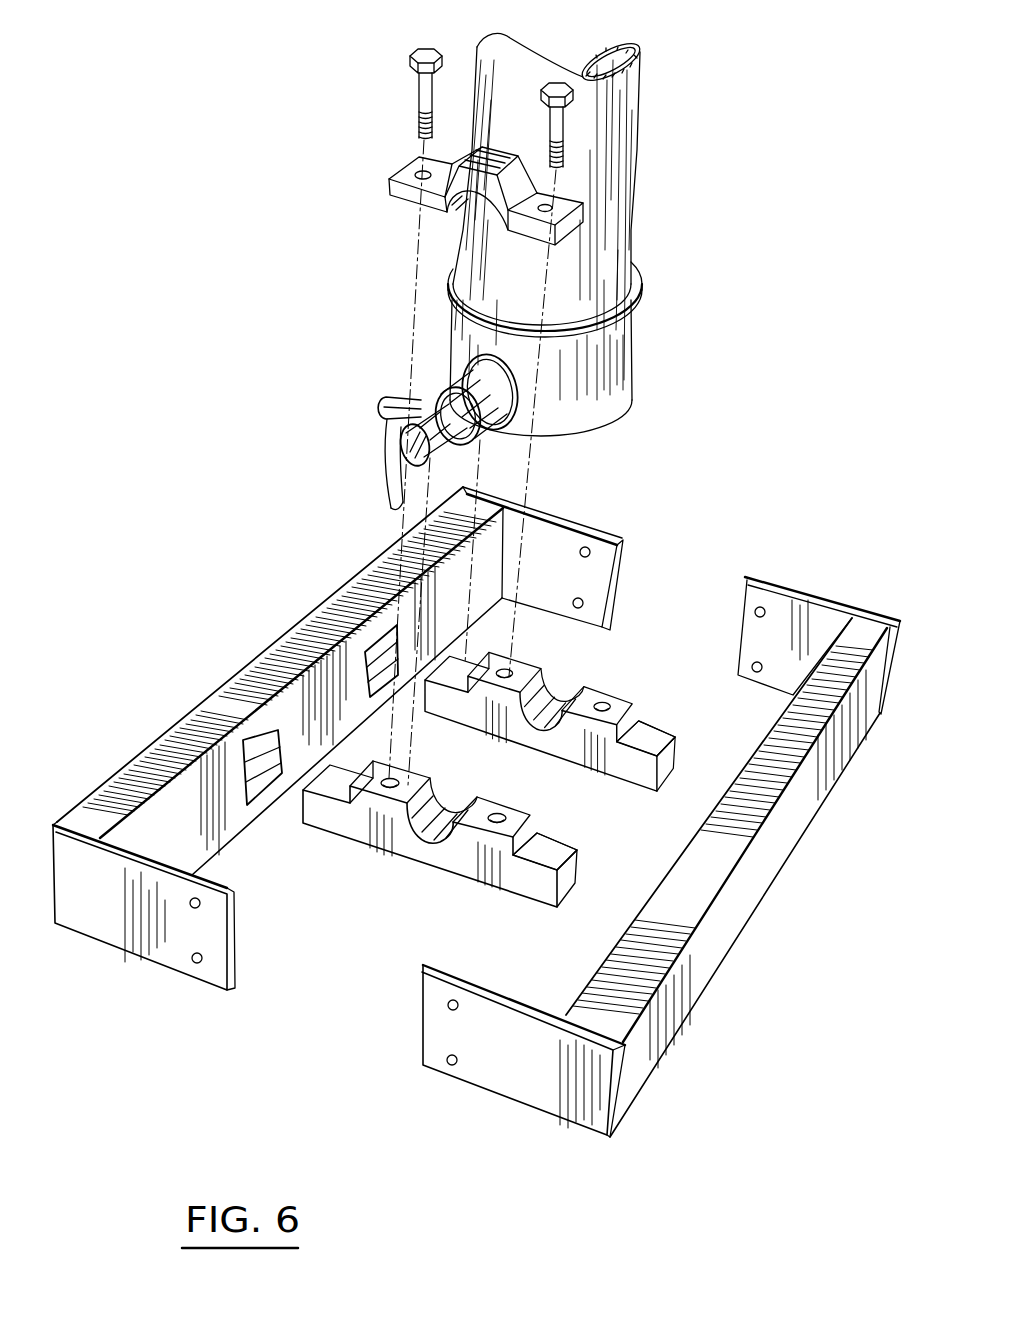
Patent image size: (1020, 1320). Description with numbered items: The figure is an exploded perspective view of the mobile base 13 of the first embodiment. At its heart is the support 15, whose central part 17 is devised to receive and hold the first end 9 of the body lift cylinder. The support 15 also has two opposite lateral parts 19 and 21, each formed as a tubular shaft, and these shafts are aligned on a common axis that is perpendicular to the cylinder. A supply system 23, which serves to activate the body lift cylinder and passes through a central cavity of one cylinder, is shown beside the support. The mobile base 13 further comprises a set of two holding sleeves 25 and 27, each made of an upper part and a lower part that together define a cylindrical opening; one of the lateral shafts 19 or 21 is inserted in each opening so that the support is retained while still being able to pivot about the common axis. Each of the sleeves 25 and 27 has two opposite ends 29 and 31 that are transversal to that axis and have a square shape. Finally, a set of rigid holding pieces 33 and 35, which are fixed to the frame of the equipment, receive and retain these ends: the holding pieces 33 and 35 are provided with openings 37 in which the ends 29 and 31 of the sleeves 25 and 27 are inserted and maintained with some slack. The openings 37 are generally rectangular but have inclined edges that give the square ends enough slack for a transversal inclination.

The first end of the cylinder 9 is at (587, 179).
The mobile base 13 is at (668, 507).
The support 15 is at (600, 389).
The central part 17 is at (566, 411).
The lateral part 19 is at (468, 372).
The lateral part 21 is at (641, 266).
The supply system 23 is at (392, 398).
The holding sleeve 25 is at (410, 205).
The holding sleeve 27 is at (637, 693).
The end of the sleeve 29 is at (326, 788).
The end of the sleeve 31 is at (667, 720).
The rigid holding piece 33 is at (203, 732).
The rigid holding piece 35 is at (673, 914).
The openings 37 is at (397, 648).